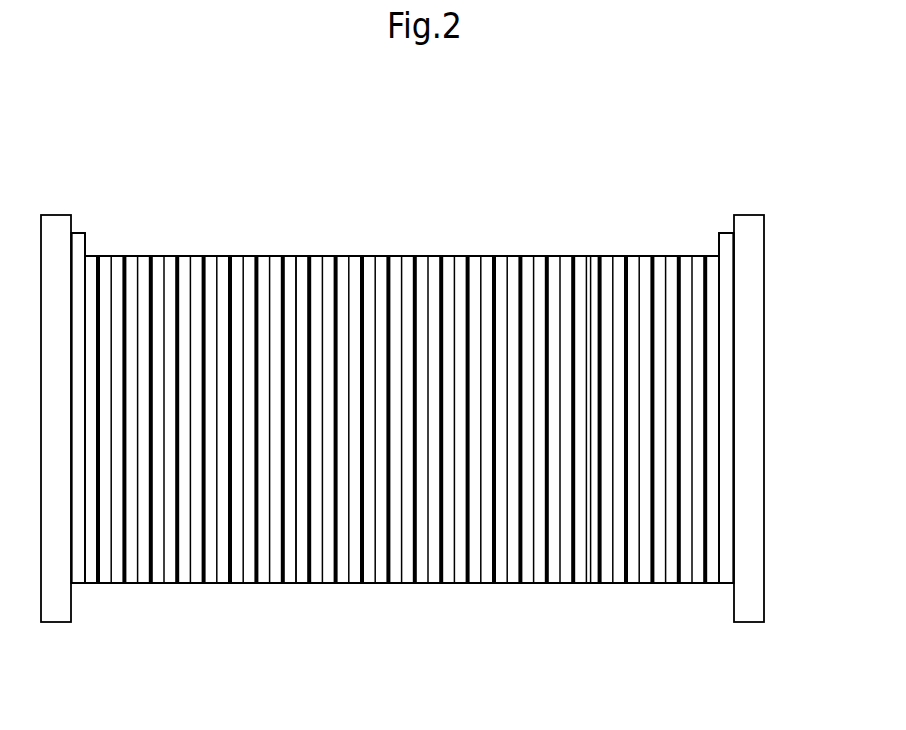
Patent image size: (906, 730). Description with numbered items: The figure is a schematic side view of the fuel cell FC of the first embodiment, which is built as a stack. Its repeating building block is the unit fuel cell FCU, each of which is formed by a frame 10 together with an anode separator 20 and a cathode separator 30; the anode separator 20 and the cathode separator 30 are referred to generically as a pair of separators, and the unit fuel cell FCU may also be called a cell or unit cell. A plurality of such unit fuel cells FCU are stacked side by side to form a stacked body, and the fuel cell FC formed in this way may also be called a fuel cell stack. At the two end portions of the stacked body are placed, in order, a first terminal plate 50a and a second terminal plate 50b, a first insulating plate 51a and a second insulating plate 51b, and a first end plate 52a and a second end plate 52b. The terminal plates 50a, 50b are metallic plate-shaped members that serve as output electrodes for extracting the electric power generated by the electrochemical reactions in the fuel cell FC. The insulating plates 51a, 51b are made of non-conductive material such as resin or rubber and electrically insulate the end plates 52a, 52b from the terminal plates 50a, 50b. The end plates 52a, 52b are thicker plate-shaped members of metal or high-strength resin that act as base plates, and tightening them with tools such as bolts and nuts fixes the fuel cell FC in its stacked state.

The fuel cell FC is at (515, 163).
The unit fuel cell FCU is at (322, 197).
The frame 10 is at (282, 257).
The anode separator 20 is at (278, 257).
The cathode separator 30 is at (291, 257).
The first terminal plate 50a is at (80, 243).
The second terminal plate 50b is at (723, 243).
The first insulating plate 51a is at (73, 588).
The second insulating plate 51b is at (732, 588).
The first end plate 52a is at (50, 622).
The second end plate 52b is at (748, 618).